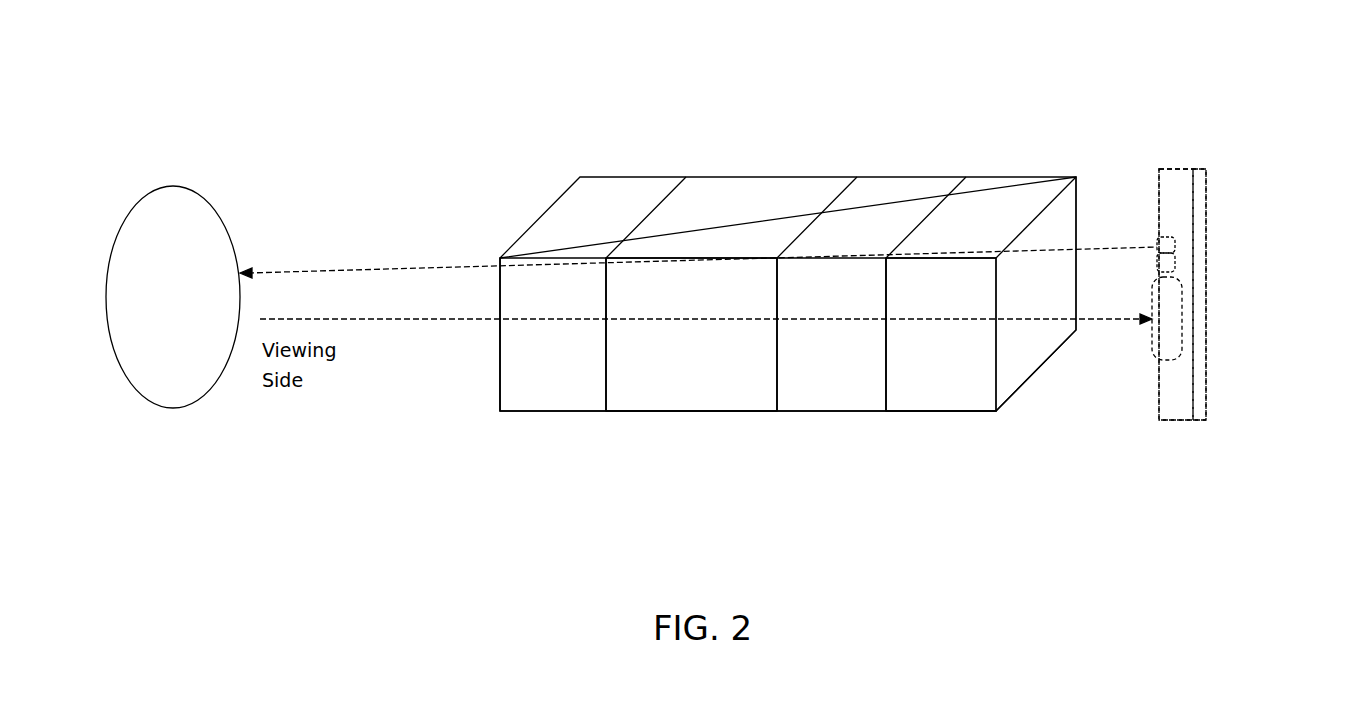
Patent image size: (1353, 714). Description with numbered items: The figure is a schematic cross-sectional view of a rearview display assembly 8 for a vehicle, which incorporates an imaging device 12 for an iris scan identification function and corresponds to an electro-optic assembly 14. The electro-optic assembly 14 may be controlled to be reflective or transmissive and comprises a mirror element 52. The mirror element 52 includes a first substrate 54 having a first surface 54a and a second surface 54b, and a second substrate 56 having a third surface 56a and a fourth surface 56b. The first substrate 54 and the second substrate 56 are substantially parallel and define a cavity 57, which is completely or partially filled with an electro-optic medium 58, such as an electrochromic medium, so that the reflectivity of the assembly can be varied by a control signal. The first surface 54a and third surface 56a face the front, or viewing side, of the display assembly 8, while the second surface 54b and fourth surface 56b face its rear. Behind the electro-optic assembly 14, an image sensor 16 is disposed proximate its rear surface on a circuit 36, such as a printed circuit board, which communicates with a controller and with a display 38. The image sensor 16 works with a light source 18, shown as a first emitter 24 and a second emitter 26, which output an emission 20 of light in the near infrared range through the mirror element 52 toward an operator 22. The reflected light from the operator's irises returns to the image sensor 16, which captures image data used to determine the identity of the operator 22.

The rearview display assembly 8 is at (485, 154).
The imaging device 12 is at (1268, 166).
The electro-optic assembly 14 is at (972, 66).
The image sensor 16 is at (1182, 320).
The light source 18 is at (1233, 233).
The emission 20 is at (383, 272).
The operator 22 is at (172, 186).
The first emitter 24 is at (1174, 245).
The second emitter 26 is at (1175, 265).
The circuit 36 is at (1195, 169).
The display 38 is at (1177, 169).
The mirror element 52 is at (1018, 186).
The first substrate 54 is at (630, 186).
The first surface 54a is at (500, 397).
The second surface 54b is at (606, 390).
The second substrate 56 is at (918, 186).
The third surface 56a is at (776, 395).
The fourth surface 56b is at (886, 395).
The cavity 57 is at (694, 392).
The electro-optic medium 58 is at (776, 186).